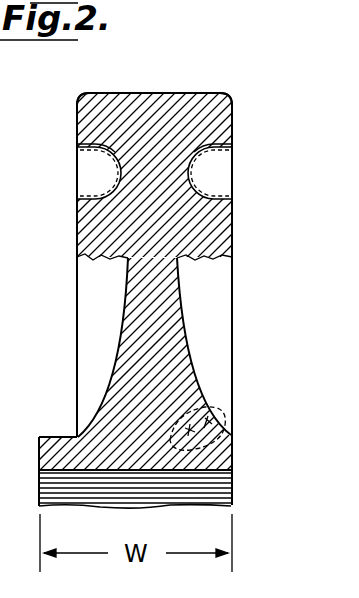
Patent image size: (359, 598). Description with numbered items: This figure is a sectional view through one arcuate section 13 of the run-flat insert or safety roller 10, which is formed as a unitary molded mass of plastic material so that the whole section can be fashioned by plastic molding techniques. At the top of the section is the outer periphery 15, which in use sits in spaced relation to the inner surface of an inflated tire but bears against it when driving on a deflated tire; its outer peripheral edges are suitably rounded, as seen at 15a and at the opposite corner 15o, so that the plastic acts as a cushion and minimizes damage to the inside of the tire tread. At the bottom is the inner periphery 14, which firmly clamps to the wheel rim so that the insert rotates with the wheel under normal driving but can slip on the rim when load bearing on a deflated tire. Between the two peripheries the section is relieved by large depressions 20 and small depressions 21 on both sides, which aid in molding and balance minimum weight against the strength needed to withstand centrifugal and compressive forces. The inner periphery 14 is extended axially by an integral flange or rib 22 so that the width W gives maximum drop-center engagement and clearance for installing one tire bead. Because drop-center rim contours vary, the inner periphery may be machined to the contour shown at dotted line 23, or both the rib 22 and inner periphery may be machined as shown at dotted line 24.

The run-flat insert 10 is at (170, 88).
The arcuate section 13 is at (231, 229).
The inner periphery 14 is at (232, 489).
The outer periphery 15 is at (142, 93).
The rounded outer peripheral edge 15a is at (86, 97).
The rounded corner 15o is at (227, 99).
The large depression 20 is at (120, 332).
The small depression 21 is at (93, 175).
The integral flange 22 is at (63, 437).
The dotted line contour 23 is at (232, 408).
The dotted line contour 24 is at (175, 475).